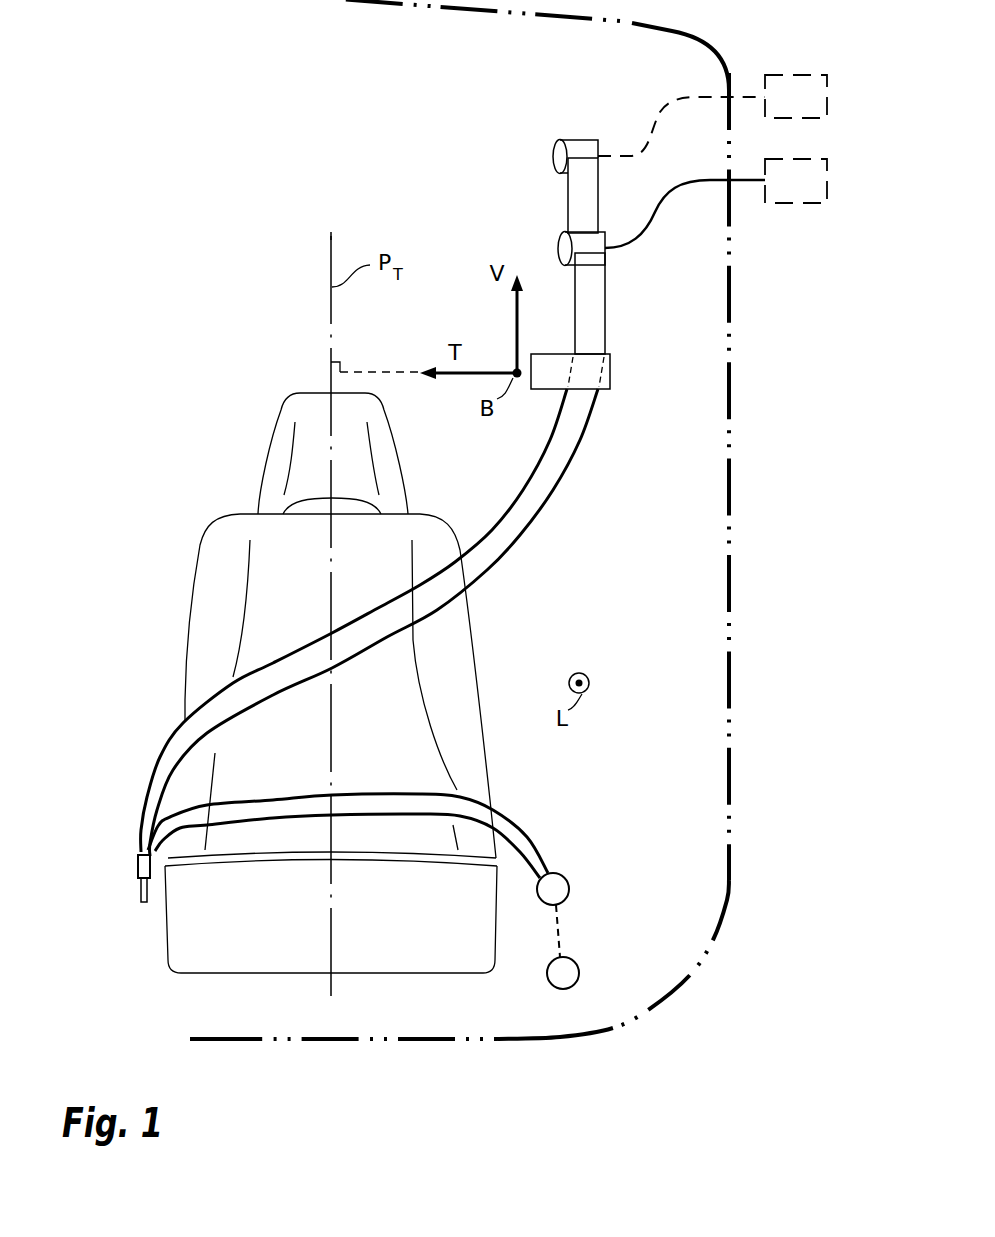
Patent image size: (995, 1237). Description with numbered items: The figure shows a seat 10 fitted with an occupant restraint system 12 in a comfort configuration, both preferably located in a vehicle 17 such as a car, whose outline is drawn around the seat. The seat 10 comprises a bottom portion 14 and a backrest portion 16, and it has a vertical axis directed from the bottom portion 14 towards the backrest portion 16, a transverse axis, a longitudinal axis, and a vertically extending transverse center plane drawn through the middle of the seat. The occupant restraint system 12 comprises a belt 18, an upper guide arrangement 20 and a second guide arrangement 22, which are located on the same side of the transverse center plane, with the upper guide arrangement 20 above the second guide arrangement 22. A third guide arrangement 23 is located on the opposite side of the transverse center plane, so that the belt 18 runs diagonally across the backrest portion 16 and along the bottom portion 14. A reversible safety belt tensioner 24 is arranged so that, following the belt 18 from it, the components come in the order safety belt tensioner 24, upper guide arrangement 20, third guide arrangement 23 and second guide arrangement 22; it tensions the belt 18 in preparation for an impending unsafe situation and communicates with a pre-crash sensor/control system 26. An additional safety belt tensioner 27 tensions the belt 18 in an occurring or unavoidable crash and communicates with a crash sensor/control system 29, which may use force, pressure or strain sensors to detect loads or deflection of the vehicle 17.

The seat 10 is at (152, 395).
The occupant restraint system 12 is at (642, 432).
The bottom portion 14 is at (386, 942).
The backrest portion 16 is at (225, 597).
The vehicle 17 is at (692, 1012).
The belt 18 is at (515, 598).
The upper guide arrangement 20 is at (635, 362).
The second guide arrangement 22 is at (556, 887).
The third guide arrangement 23 is at (119, 888).
The safety belt tensioner 24 is at (560, 248).
The pre-crash sensor/control system 26 is at (781, 193).
The additional safety belt tensioner 27 is at (558, 162).
The crash sensor/control system 29 is at (781, 109).